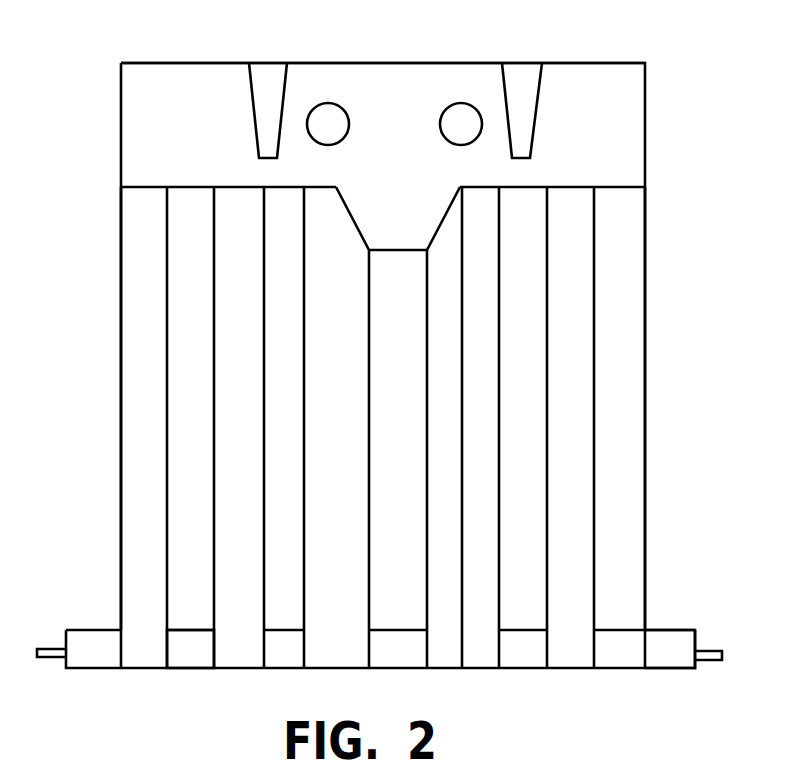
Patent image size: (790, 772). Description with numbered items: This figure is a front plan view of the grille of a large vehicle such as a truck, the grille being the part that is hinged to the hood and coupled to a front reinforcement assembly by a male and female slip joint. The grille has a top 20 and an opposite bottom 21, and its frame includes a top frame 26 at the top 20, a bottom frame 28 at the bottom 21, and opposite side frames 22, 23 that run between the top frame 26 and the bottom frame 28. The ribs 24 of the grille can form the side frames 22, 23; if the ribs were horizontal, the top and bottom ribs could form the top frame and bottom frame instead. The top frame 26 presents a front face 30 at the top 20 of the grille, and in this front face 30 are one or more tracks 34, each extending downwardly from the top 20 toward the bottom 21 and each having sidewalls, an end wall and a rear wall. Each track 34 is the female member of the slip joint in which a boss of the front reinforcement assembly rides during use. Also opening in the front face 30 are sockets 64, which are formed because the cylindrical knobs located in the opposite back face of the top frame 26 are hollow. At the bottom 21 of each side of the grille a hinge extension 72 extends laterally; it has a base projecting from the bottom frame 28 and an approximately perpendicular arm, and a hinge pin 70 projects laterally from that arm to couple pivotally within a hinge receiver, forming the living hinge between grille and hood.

The top 20 is at (583, 63).
The bottom 21 is at (572, 668).
The side frame 22 is at (645, 370).
The side frame 23 is at (121, 352).
The ribs 24 is at (233, 451).
The top frame 26 is at (163, 85).
The bottom frame 28 is at (182, 660).
The front face 30 is at (615, 137).
The track 34 is at (270, 84).
The socket 64 is at (465, 108).
The hinge pin 70 is at (708, 658).
The hinge extension 72 is at (663, 642).